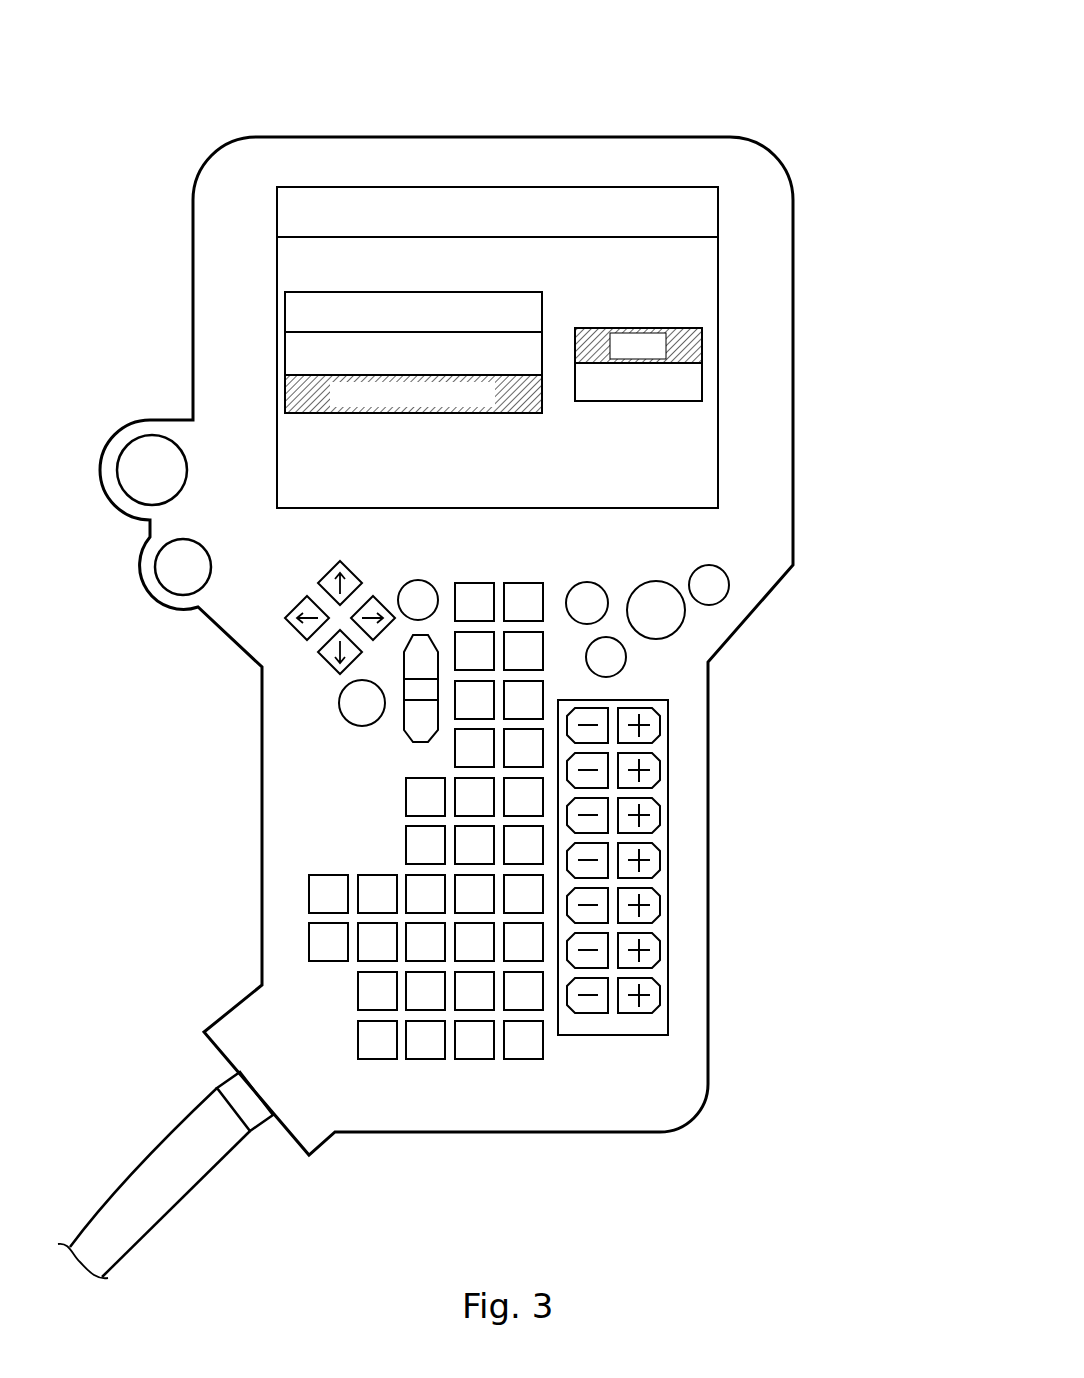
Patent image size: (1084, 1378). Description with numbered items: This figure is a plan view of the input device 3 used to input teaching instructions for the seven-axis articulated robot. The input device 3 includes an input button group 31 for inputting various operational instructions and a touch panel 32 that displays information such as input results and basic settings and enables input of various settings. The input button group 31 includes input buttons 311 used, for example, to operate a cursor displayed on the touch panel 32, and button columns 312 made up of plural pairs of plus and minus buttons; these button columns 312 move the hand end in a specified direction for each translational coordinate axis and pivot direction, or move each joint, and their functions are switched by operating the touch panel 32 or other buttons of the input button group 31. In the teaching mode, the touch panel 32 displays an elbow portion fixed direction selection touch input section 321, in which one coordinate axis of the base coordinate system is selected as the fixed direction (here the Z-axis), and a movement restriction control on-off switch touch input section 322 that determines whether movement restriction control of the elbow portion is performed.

The input device 3 is at (503, 639).
The input button group 31 is at (500, 810).
The input buttons 311 is at (307, 640).
The button columns 312 is at (667, 790).
The touch panel 32 is at (514, 347).
The elbow portion fixed direction selection touch input section 321 is at (285, 350).
The movement restriction control on-off switch touch input section 322 is at (680, 401).